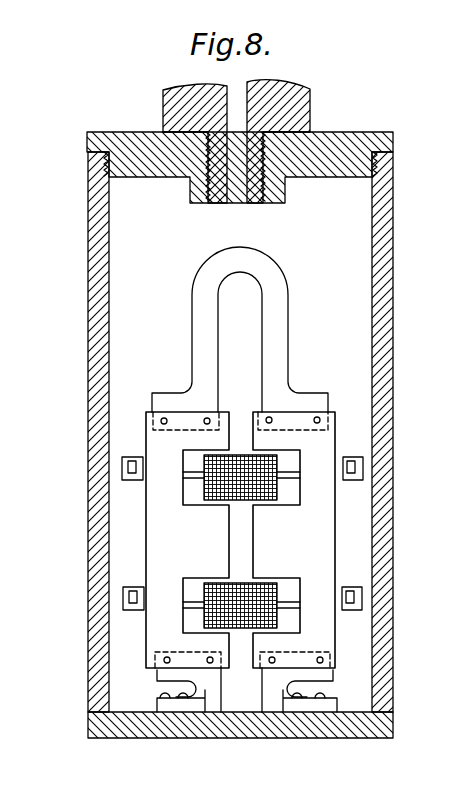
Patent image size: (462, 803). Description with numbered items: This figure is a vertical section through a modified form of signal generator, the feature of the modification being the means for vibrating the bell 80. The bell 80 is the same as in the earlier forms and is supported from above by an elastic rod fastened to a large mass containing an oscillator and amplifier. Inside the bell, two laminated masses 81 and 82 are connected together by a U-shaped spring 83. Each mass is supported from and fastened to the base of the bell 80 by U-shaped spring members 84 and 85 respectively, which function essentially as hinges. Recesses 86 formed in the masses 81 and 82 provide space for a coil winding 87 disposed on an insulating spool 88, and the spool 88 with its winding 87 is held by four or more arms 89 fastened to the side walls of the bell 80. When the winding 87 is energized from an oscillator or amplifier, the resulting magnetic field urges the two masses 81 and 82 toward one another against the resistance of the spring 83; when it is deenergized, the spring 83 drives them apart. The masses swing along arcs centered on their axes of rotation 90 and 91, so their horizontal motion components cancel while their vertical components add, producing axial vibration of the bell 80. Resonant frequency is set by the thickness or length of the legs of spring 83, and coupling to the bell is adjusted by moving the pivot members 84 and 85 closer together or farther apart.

The bell 80 is at (392, 375).
The laminated mass 81 is at (322, 538).
The laminated mass 82 is at (158, 543).
The U-shaped spring 83 is at (268, 282).
The U-shaped spring member 84 is at (325, 676).
The U-shaped spring member 85 is at (165, 677).
The recess 86 is at (297, 495).
The coil winding 87 is at (213, 473).
The insulating spool 88 is at (210, 488).
The arm 89 is at (357, 466).
The axis of rotation 90 is at (277, 690).
The axis of rotation 91 is at (205, 692).